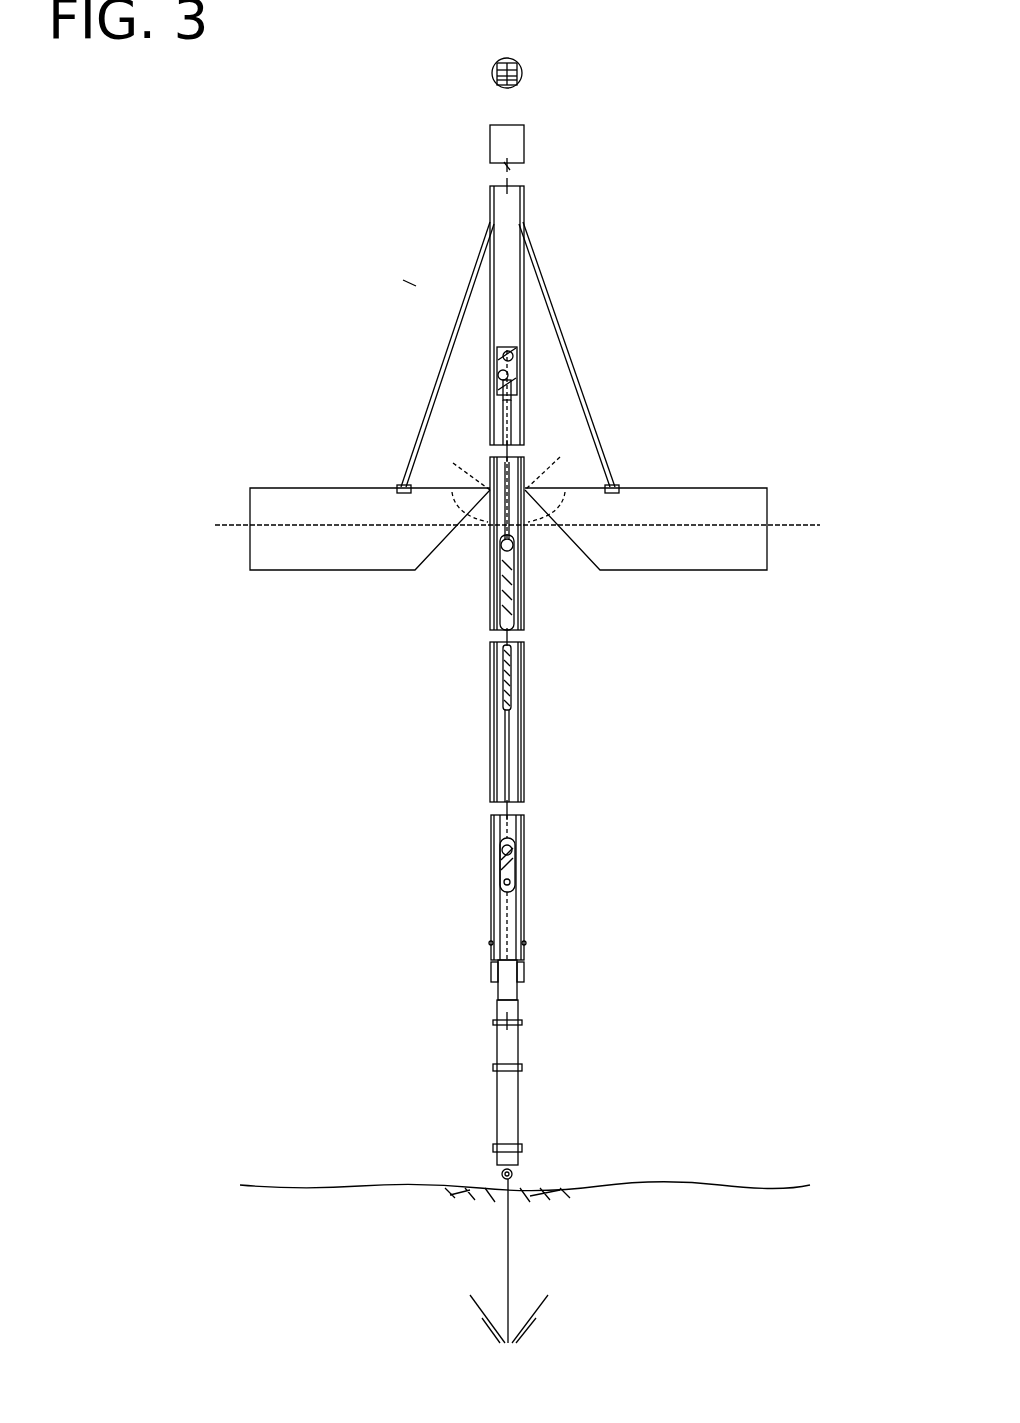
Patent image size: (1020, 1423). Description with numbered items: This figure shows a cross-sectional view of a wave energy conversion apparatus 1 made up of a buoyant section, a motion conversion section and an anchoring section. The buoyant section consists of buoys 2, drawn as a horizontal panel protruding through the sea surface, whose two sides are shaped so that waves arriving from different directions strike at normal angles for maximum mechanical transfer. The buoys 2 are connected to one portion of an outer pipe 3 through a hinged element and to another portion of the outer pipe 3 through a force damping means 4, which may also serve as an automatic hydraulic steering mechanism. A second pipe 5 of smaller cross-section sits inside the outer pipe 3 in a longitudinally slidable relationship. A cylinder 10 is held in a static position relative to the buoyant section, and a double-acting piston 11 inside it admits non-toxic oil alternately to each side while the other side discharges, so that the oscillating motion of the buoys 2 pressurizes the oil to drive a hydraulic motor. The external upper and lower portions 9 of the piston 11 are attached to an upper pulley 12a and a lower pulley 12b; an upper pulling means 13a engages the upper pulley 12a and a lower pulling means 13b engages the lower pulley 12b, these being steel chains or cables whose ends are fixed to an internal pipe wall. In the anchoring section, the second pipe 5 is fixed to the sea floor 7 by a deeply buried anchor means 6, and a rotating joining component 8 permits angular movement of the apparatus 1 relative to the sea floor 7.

The wave energy conversion apparatus 1 is at (221, 188).
The buoys 2 is at (673, 498).
The outer pipe 3 is at (525, 704).
The force damping means 4 is at (584, 386).
The second pipe 5 is at (515, 992).
The anchor means 6 is at (510, 1247).
The sea floor 7 is at (727, 1213).
The rotating joining component 8 is at (515, 1172).
The external upper and lower portions of the piston 9 is at (507, 772).
The cylinder 10 is at (566, 668).
The double-acting piston 11 is at (492, 600).
The upper pulley 12a is at (492, 535).
The lower pulley 12b is at (520, 880).
The upper pulling means 13a is at (527, 362).
The lower pulling means 13b is at (440, 866).